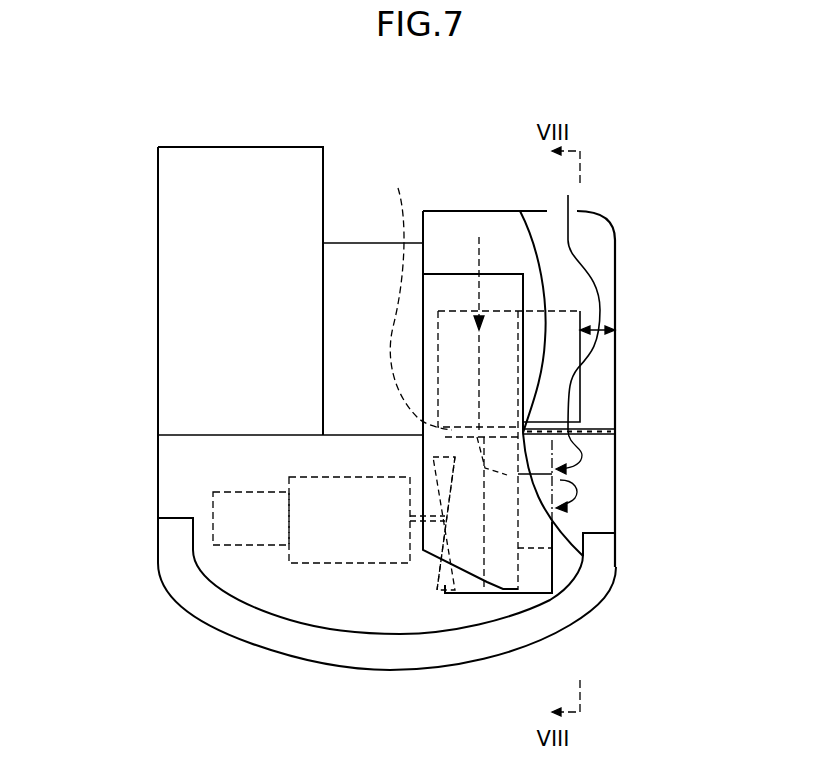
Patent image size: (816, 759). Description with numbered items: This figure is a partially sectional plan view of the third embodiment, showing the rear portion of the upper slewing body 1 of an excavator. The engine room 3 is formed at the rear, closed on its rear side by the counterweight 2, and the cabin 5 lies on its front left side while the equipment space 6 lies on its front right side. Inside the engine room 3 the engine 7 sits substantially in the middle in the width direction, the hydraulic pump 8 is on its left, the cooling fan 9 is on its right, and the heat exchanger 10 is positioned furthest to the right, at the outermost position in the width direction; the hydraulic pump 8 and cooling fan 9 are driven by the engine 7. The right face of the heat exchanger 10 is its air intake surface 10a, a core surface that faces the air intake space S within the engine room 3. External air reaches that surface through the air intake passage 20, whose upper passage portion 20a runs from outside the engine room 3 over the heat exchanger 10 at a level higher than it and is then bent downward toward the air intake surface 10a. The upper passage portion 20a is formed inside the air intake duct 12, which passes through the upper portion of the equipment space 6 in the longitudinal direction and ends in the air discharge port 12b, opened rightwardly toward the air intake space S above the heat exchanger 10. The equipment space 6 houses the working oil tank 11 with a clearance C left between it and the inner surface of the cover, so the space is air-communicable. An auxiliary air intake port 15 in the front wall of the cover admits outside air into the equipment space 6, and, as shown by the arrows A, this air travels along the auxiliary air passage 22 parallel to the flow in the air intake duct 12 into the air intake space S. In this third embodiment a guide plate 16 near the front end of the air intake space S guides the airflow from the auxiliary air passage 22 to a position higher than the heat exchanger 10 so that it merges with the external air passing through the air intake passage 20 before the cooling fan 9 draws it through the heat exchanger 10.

The upper slewing body 1 is at (158, 318).
The counterweight 2 is at (333, 668).
The engine room 3 is at (400, 625).
The cabin 5 is at (158, 193).
The equipment space 6 is at (582, 293).
The engine 7 is at (347, 563).
The hydraulic pump 8 is at (248, 545).
The cooling fan 9 is at (440, 588).
The heat exchanger 10 is at (500, 593).
The air intake surface 10a is at (552, 548).
The working oil tank 11 is at (583, 397).
The air intake duct 12 is at (531, 381).
The air discharge port 12b is at (605, 534).
The auxiliary air intake port 15 is at (580, 207).
The guide plate 16 is at (593, 436).
The air intake passage 20 is at (585, 507).
The upper passage portion 20a is at (449, 297).
The auxiliary air passage 22 is at (603, 358).
The arrows A is at (566, 396).
The clearance C is at (602, 312).
The air intake space S is at (607, 493).